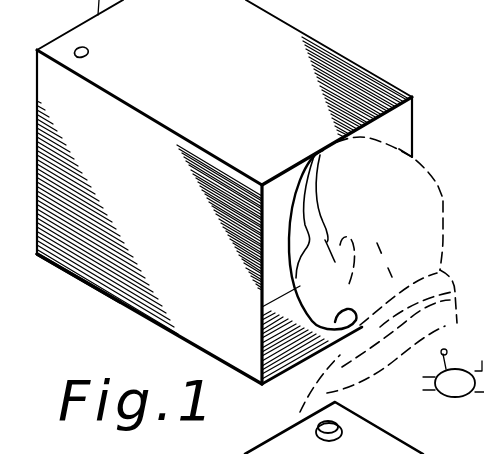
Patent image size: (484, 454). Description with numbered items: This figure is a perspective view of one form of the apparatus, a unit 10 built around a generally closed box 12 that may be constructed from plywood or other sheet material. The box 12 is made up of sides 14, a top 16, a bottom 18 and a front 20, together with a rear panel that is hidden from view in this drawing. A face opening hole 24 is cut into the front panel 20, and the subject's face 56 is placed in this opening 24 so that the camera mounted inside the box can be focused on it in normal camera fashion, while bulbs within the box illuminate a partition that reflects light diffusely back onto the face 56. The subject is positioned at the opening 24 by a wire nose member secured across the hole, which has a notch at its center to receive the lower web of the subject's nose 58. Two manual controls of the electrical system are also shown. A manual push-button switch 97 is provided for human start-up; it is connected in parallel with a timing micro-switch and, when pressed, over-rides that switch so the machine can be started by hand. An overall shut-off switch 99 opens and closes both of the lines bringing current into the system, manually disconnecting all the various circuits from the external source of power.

The unit 10 is at (314, 24).
The closed box 12 is at (158, 328).
The sides 14 is at (180, 247).
The top 16 is at (240, 75).
The bottom 18 is at (115, 301).
The front panel 20 is at (396, 127).
The face opening hole 24 is at (262, 322).
The subject's face 56 is at (462, 177).
The nose 58 is at (334, 215).
The manual push-button switch 97 is at (340, 429).
The overall shut-off switch 99 is at (88, 50).